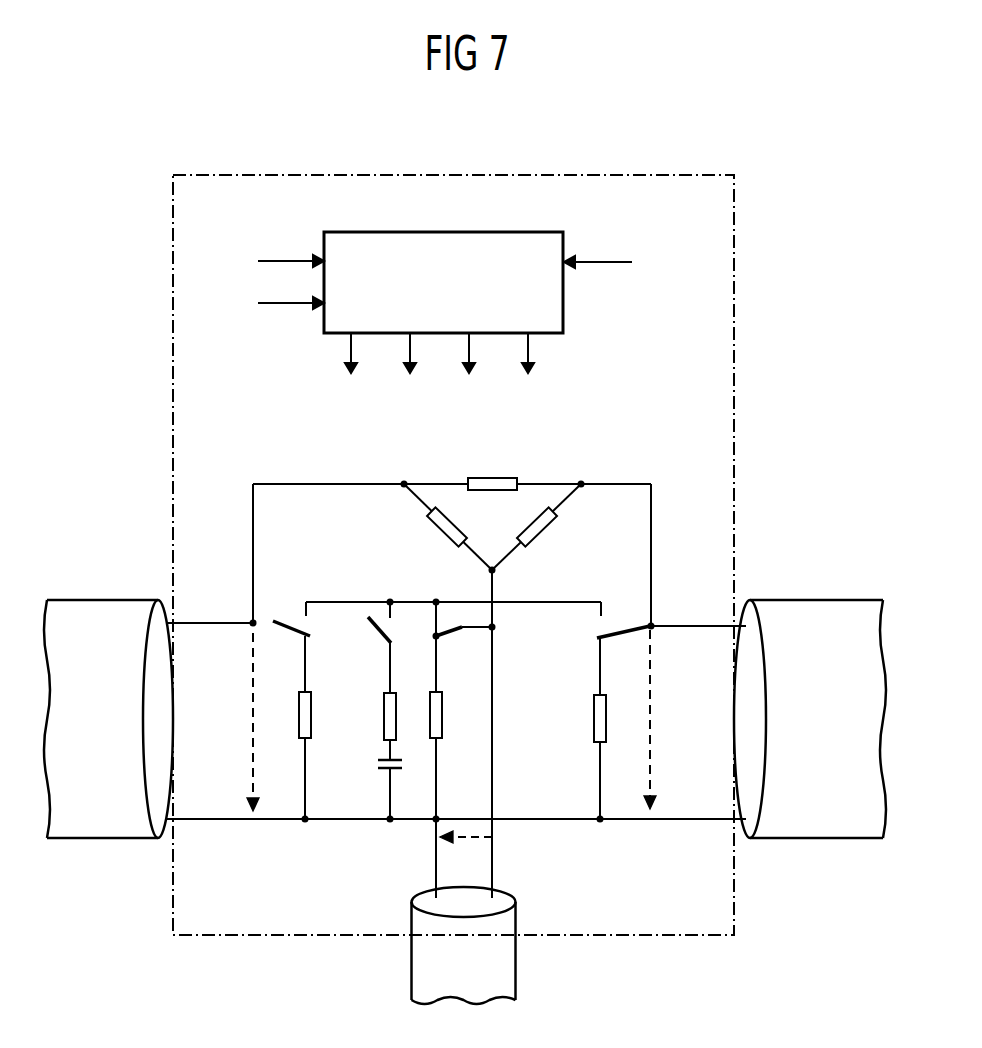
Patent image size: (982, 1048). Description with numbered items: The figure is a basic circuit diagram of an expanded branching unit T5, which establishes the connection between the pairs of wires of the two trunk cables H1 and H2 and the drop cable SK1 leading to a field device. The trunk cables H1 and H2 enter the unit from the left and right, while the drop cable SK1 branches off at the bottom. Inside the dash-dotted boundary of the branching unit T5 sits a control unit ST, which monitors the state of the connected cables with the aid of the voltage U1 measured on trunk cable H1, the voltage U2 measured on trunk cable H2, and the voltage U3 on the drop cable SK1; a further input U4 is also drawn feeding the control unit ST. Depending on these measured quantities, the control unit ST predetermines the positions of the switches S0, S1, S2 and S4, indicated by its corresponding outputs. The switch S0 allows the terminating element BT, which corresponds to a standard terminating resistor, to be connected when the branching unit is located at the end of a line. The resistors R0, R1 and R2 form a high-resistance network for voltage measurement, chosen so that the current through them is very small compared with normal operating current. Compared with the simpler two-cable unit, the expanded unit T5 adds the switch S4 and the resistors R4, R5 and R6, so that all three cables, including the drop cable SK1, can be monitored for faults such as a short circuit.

The branching unit T5 is at (704, 393).
The control unit ST is at (430, 298).
The voltage U1 is at (241, 527).
The voltage U2 is at (661, 527).
The voltage U3 is at (466, 855).
The fourth voltage U4 is at (243, 303).
The switch S0 is at (372, 624).
The switch S1 is at (290, 626).
The switch S2 is at (625, 626).
The switch S4 is at (458, 628).
The resistor R0 is at (492, 467).
The resistor R1 is at (321, 727).
The resistor R2 is at (584, 728).
The resistor R4 is at (452, 727).
The resistor R5 is at (448, 527).
The resistor R6 is at (536, 527).
The terminating element BT is at (377, 731).
The trunk cable H1 is at (72, 733).
The trunk cable H2 is at (833, 733).
The drop cable SK1 is at (442, 984).